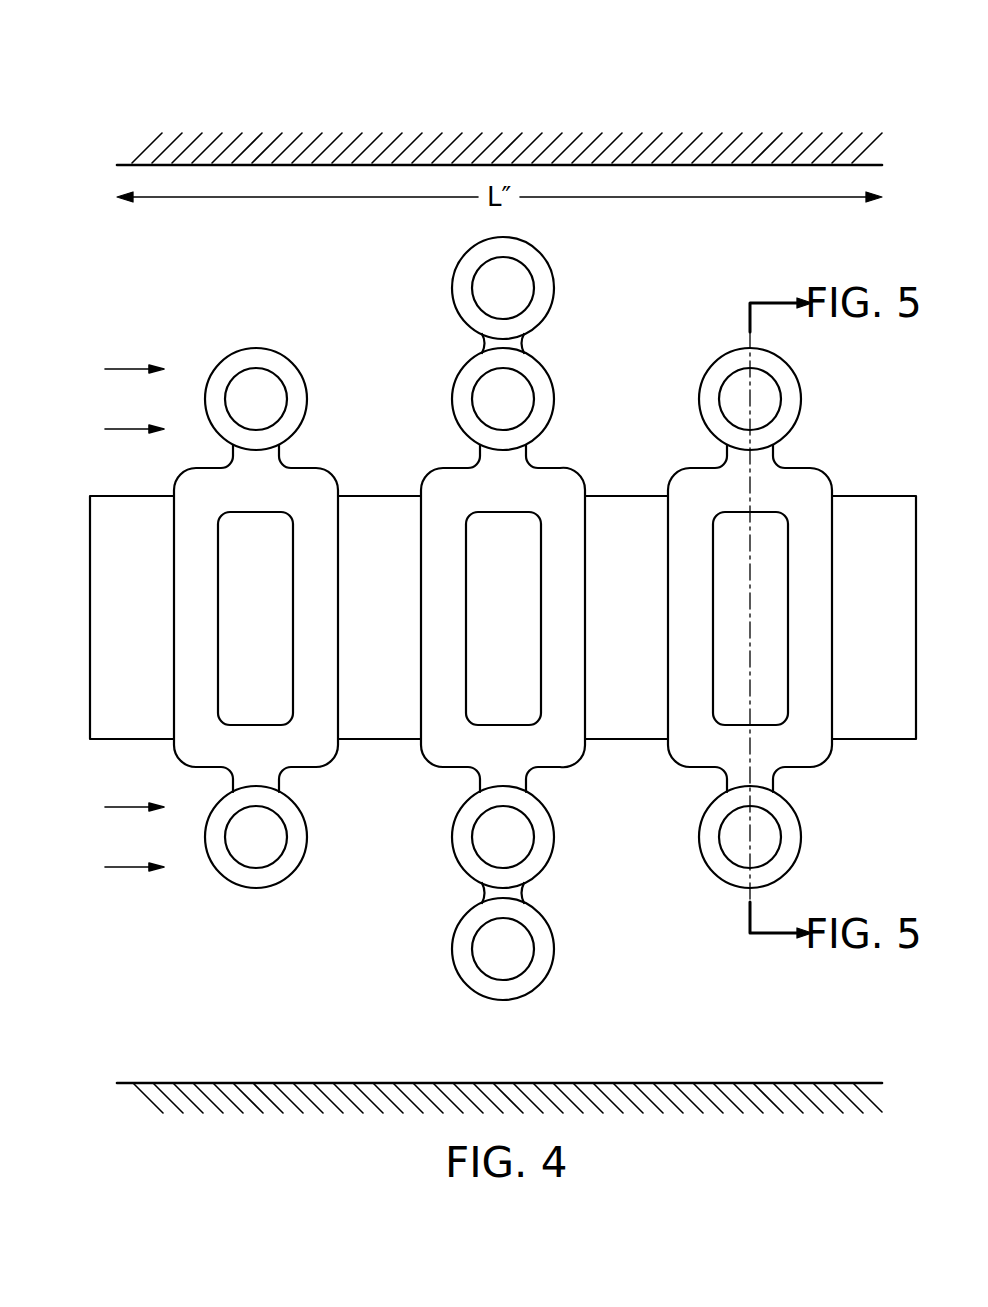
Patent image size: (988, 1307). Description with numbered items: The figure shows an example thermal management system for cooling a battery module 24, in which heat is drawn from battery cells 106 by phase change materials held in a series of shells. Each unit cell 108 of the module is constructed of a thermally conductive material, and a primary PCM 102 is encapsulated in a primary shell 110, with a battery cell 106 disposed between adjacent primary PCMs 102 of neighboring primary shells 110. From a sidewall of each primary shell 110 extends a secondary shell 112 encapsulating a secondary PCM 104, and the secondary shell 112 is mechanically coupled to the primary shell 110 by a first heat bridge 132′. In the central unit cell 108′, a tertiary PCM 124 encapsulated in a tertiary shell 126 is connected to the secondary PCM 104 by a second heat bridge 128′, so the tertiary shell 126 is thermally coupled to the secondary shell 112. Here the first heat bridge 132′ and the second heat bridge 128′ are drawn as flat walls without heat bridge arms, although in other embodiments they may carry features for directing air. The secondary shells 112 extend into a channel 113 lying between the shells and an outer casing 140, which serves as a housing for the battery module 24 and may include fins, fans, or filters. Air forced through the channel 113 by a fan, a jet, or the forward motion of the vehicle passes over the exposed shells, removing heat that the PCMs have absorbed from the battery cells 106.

The battery module 24 is at (845, 100).
The outer casing 140 is at (124, 163).
The battery cell 106 is at (100, 600).
The primary shell 110 is at (565, 483).
The primary PCM 102 is at (490, 632).
The unit cell 108 is at (222, 346).
The stacked ring element 108′ is at (450, 354).
The second heat bridge 128′ is at (516, 345).
The first heat bridge 132′ is at (505, 780).
The secondary PCM 104 is at (490, 838).
The secondary shell 112 is at (545, 840).
The tertiary PCM 124 is at (490, 950).
The tertiary shell 126 is at (545, 953).
The channel 113 is at (92, 399).